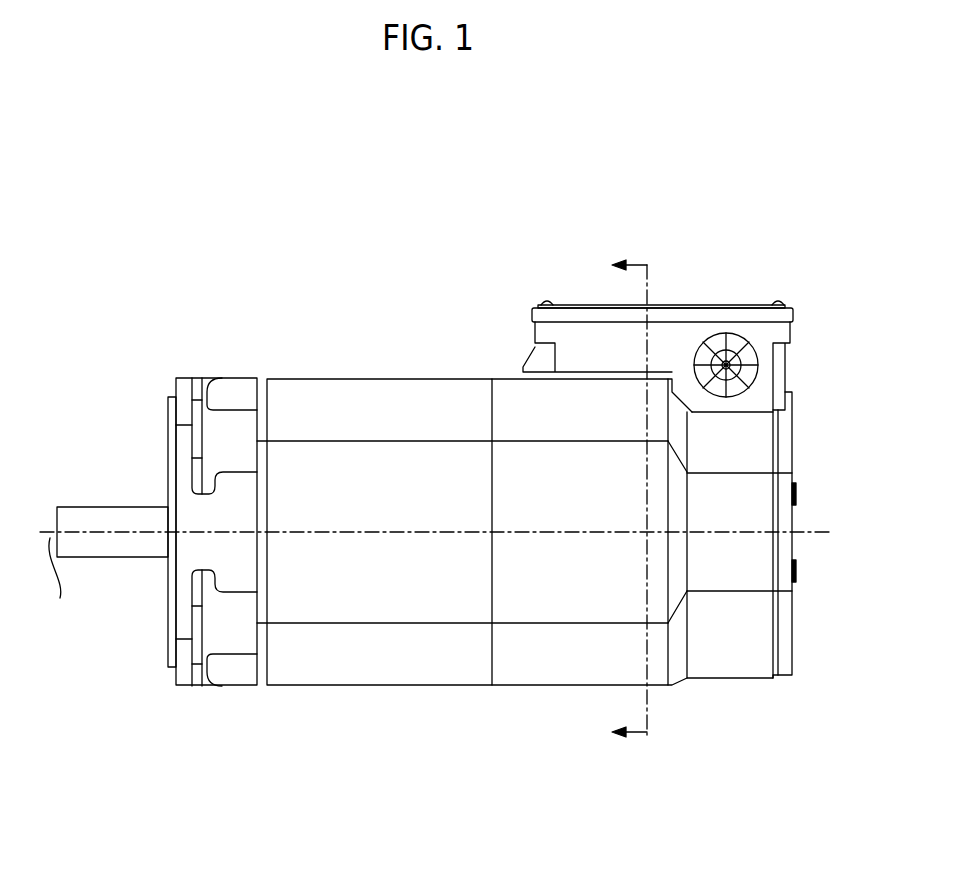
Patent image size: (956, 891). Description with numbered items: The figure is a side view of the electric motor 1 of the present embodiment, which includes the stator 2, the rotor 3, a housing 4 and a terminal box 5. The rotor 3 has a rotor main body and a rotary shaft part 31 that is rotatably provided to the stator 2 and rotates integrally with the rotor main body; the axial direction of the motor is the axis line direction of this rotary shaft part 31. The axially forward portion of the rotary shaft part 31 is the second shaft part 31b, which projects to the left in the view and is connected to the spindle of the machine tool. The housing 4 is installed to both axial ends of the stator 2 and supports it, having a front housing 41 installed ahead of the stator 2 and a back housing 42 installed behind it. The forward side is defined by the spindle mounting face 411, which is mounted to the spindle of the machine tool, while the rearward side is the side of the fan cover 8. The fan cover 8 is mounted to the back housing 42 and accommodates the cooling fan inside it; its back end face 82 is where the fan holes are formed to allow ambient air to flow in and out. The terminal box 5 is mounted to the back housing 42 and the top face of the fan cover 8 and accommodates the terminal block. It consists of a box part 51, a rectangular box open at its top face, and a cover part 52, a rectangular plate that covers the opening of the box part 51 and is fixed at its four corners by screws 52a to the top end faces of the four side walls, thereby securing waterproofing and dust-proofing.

The electric motor 1 is at (580, 167).
The stator 2 is at (388, 400).
The rotor 3 is at (370, 503).
The rotary shaft part 31 is at (87, 515).
The second shaft part 31b is at (112, 532).
The housing 4 is at (388, 490).
The front housing 41 is at (208, 378).
The spindle mounting face 411 is at (168, 418).
The back housing 42 is at (510, 379).
The terminal box 5 is at (742, 306).
The box part 51 is at (675, 335).
The cover part 52 is at (710, 305).
The screws 52a is at (547, 300).
The fan cover 8 is at (758, 438).
The back end face 82 is at (792, 458).